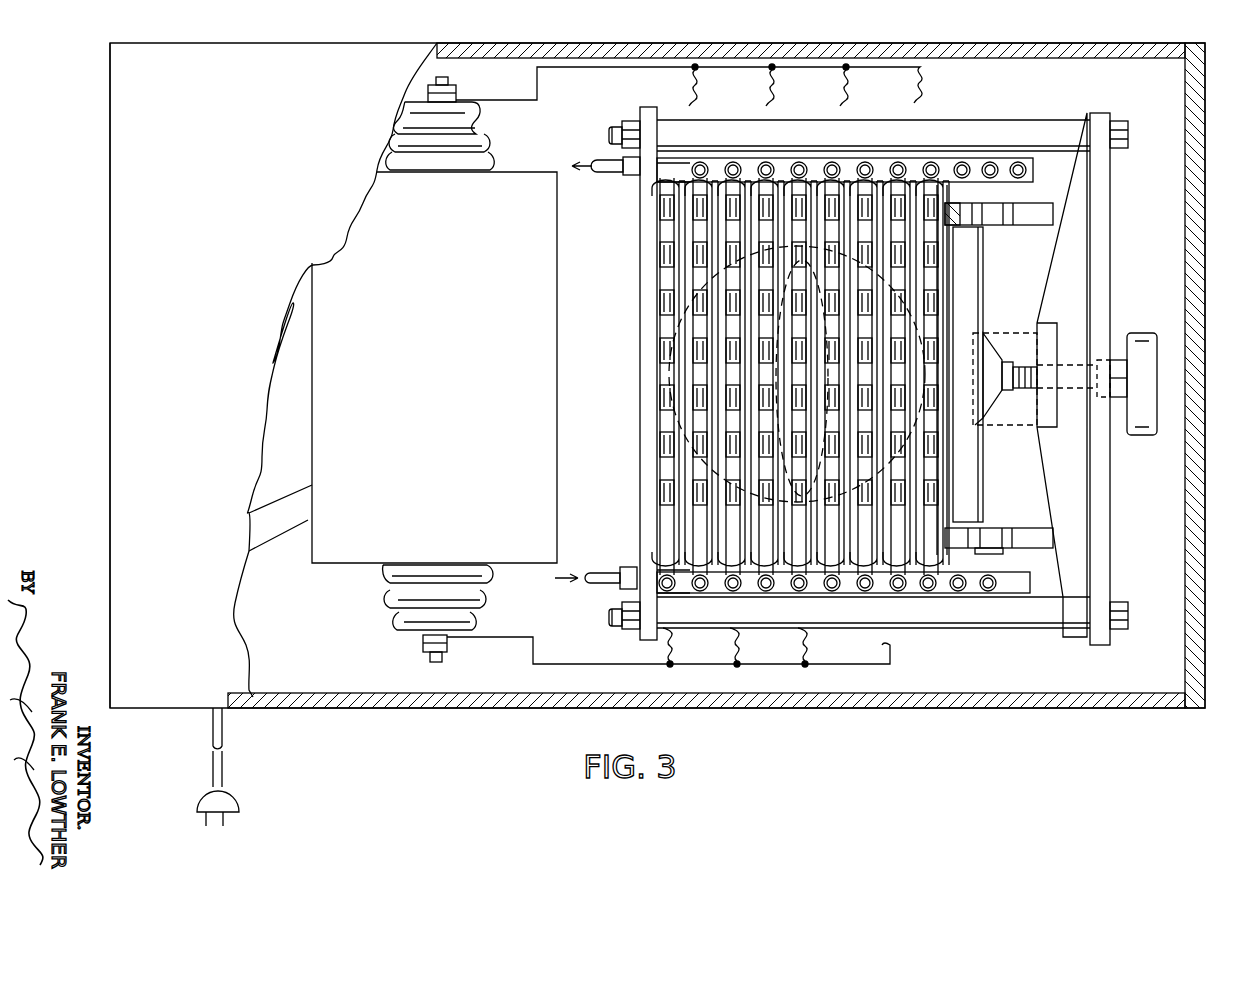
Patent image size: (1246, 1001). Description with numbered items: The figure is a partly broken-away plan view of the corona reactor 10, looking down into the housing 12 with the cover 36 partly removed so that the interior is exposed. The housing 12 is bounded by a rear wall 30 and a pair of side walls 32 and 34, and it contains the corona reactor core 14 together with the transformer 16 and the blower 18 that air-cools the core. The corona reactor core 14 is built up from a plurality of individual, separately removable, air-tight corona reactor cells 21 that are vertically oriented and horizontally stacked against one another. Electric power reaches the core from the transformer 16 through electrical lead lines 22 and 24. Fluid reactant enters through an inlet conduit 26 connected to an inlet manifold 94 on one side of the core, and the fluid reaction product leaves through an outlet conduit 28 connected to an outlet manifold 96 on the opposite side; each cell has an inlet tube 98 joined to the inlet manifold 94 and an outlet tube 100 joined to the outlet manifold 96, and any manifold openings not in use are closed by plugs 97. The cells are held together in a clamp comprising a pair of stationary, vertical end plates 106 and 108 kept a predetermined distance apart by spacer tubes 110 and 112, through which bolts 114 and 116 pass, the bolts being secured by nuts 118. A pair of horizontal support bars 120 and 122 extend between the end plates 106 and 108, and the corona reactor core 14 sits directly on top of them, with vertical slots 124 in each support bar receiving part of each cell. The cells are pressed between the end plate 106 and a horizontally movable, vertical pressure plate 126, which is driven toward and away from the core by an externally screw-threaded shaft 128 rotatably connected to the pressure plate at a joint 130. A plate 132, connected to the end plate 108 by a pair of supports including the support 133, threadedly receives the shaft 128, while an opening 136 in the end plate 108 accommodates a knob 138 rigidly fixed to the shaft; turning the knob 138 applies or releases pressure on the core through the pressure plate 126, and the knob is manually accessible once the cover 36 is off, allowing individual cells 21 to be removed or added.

The corona reactor 10 is at (74, 270).
The housing 12 is at (110, 168).
The corona reactor core 14 is at (979, 111).
The transformer 16 is at (434, 367).
The blower 18 is at (702, 465).
The corona reactor cells 21 is at (741, 172).
The electrical lead line 22 is at (517, 638).
The electrical lead line 24 is at (504, 100).
The inlet conduit 26 is at (586, 582).
The outlet conduit 28 is at (600, 172).
The rear wall 30 is at (1206, 350).
The side wall 32 is at (965, 706).
The side wall 34 is at (908, 46).
The cover 36 is at (331, 370).
The inlet manifold 94 is at (668, 574).
The outlet manifold 96 is at (676, 166).
The plugs 97 is at (986, 592).
The inlet tube 98 is at (830, 592).
The outlet tube 100 is at (772, 160).
The end plate 106 is at (640, 370).
The end plate 108 is at (1106, 566).
The spacer tube 110 is at (1018, 618).
The spacer tube 112 is at (1040, 120).
The bolt 114 is at (608, 614).
The bolt 116 is at (608, 130).
The nuts 118 is at (629, 122).
The horizontal support bar 120 is at (1023, 526).
The horizontal support bar 122 is at (1024, 218).
The vertical slots 124 is at (1004, 550).
The pressure plate 126 is at (975, 312).
The screw-threaded shaft 128 is at (1012, 362).
The joint 130 is at (990, 422).
The plate 132 is at (990, 408).
The support 133 is at (1046, 274).
The opening 136 is at (1110, 360).
The knob 138 is at (1141, 435).